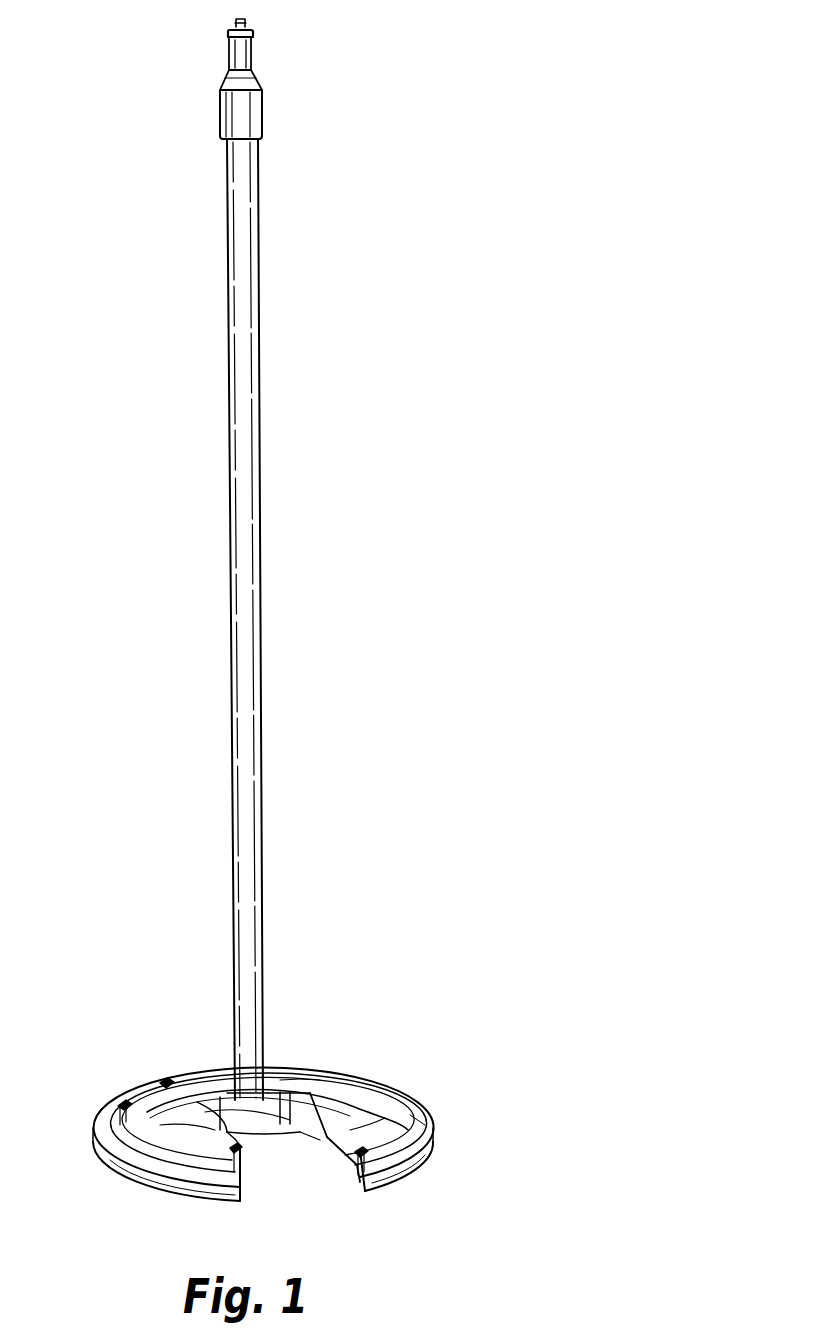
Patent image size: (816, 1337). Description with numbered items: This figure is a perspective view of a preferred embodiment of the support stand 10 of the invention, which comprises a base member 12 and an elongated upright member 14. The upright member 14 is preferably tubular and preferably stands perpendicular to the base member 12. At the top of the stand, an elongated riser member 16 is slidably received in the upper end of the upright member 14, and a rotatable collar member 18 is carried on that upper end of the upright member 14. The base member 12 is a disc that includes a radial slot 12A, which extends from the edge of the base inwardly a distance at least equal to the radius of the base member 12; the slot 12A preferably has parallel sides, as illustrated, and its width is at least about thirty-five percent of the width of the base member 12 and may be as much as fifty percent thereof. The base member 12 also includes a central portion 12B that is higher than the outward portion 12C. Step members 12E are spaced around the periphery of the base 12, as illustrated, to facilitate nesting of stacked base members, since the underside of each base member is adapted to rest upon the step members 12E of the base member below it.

The support stand 10 is at (462, 663).
The base member 12 is at (355, 1088).
The radial slot 12A is at (330, 1137).
The central portion 12B is at (318, 1080).
The outward portion 12C is at (425, 1125).
The step members 12E is at (158, 1080).
The upright member 14 is at (245, 450).
The riser member 16 is at (252, 60).
The collar member 18 is at (260, 128).